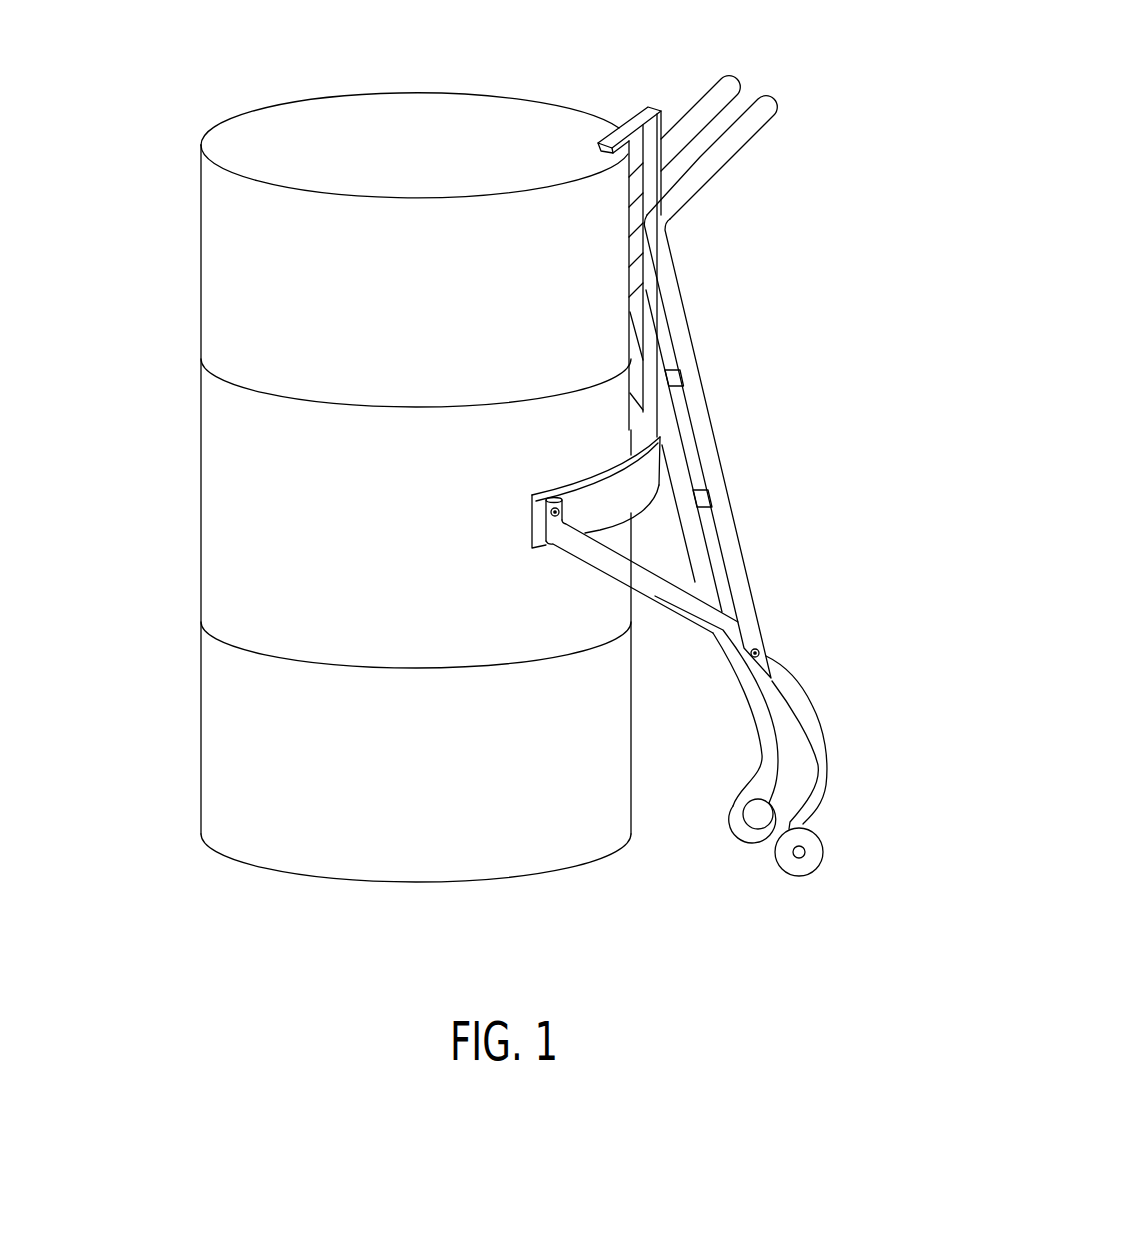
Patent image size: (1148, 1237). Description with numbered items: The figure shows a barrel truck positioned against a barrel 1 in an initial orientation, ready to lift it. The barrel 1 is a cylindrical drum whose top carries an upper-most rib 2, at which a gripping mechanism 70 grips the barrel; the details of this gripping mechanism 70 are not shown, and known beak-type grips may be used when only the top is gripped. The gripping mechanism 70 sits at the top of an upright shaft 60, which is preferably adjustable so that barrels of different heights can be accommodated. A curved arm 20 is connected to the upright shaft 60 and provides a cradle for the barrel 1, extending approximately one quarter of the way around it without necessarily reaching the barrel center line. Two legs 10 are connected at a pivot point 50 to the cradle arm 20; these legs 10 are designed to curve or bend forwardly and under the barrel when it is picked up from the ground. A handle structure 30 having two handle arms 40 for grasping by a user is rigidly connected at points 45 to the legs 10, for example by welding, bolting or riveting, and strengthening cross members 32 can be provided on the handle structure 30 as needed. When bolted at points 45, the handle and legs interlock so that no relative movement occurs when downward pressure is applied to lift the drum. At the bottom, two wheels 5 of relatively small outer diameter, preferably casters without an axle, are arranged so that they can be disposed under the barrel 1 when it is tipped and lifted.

The barrel 1 is at (218, 762).
The upper-most rib 2 is at (268, 134).
The wheels 5 is at (742, 838).
The legs 10 is at (805, 700).
The curved arm 20 is at (597, 500).
The handle structure 30 is at (713, 436).
The strengthening cross members 32 is at (672, 377).
The handle arms 40 is at (720, 95).
The connection point 45 is at (756, 648).
The pivot point 50 is at (552, 512).
The upright shaft 60 is at (648, 182).
The gripping mechanism 70 is at (607, 140).